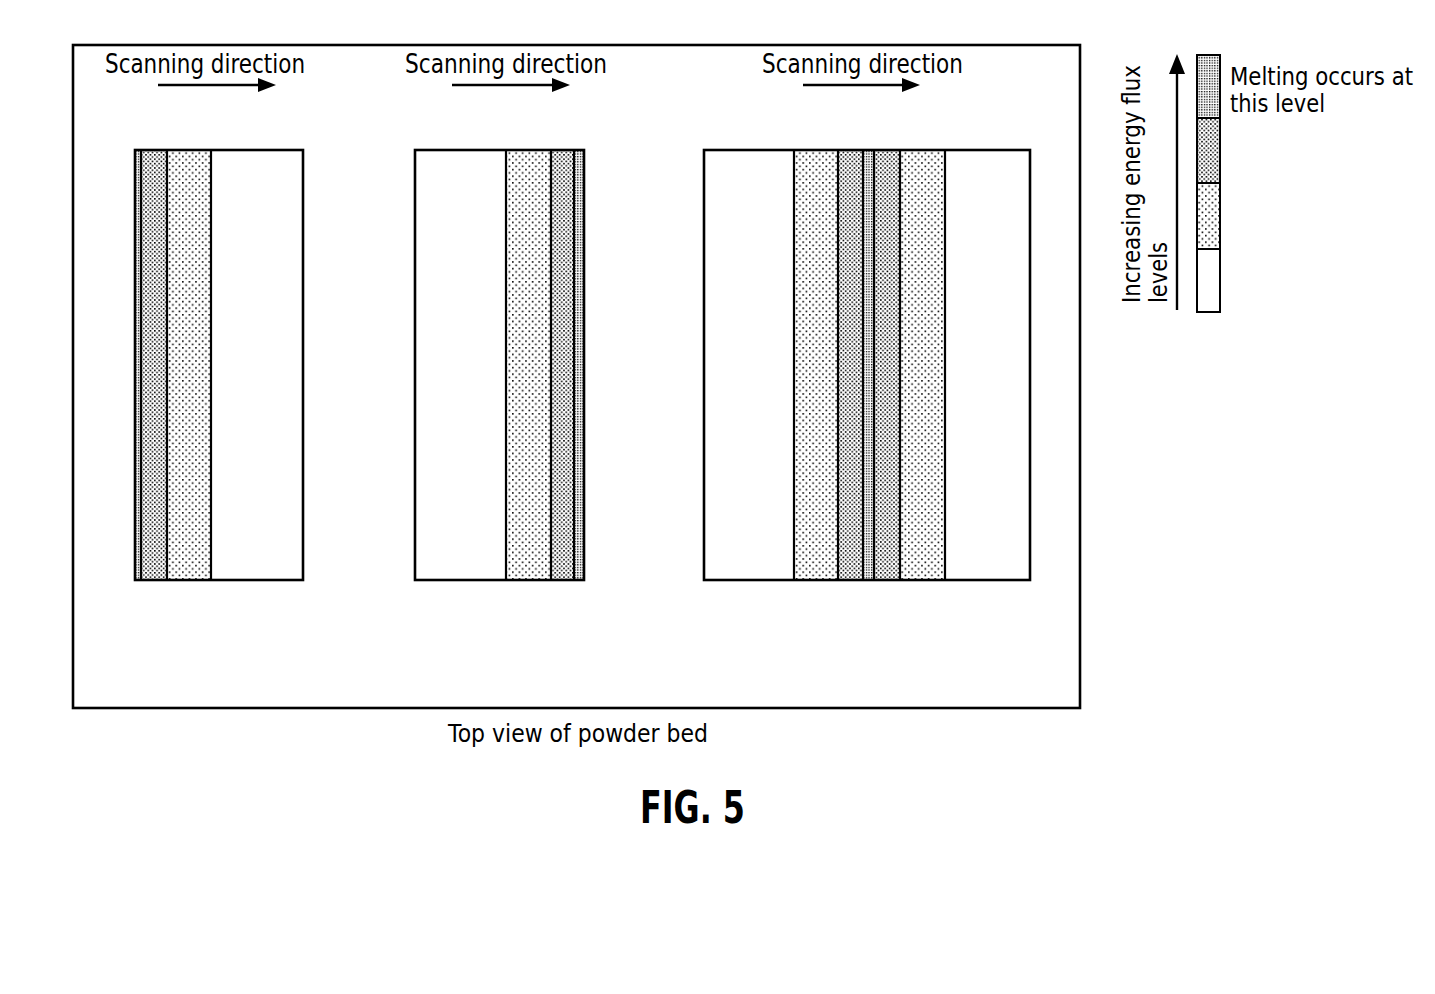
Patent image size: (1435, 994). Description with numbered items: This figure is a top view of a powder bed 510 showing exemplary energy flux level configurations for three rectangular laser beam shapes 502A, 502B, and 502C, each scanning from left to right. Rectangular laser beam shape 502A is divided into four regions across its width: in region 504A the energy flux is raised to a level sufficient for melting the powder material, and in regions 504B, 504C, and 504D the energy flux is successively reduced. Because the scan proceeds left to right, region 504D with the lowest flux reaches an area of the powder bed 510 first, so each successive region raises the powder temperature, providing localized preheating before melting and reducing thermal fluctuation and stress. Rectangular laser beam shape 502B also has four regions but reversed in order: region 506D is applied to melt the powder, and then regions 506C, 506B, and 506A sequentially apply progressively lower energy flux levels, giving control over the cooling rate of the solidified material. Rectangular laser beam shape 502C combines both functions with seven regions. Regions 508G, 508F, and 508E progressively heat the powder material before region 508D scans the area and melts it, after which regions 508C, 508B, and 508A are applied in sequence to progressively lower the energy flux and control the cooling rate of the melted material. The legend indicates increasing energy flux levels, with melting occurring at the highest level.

The rectangular laser beam shape 502A is at (206, 385).
The rectangular laser beam shape 502B is at (530, 385).
The rectangular laser beam shape 502C is at (878, 385).
The region 504A is at (135, 582).
The region 504B is at (152, 582).
The region 504C is at (185, 582).
The region 504D is at (265, 582).
The region 506A is at (443, 582).
The region 506B is at (507, 582).
The region 506C is at (562, 582).
The region 506D is at (582, 582).
The region 508A is at (733, 582).
The region 508B is at (798, 582).
The region 508C is at (843, 582).
The region 508D is at (868, 582).
The region 508E is at (887, 582).
The region 508F is at (937, 582).
The region 508G is at (1030, 582).
The powder bed 510 is at (1022, 700).